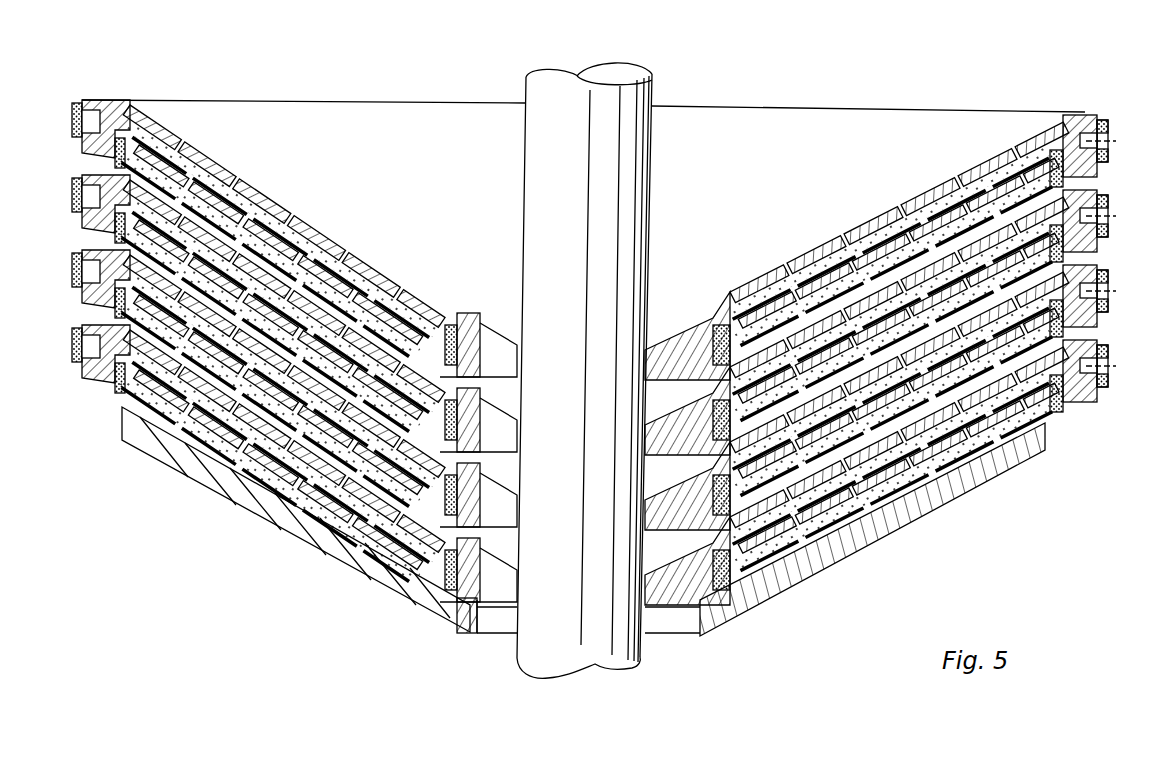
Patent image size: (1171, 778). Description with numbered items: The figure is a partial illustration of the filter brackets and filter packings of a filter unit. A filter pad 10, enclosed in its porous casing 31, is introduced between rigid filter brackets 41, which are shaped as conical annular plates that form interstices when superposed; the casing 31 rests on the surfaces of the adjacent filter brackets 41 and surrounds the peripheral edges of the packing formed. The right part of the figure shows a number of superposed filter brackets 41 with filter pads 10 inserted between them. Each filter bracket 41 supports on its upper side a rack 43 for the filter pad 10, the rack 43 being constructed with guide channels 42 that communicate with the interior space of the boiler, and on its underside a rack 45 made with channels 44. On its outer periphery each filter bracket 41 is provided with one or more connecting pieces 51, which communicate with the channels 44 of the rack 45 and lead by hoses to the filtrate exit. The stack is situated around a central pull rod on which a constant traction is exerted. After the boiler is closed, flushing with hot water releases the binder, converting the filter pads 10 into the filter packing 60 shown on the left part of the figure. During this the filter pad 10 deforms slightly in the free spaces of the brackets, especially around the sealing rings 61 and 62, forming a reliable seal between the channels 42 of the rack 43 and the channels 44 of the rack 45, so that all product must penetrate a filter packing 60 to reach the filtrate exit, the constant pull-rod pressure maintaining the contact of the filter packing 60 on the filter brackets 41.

The filter pad 10 is at (1002, 203).
The casing 31 is at (868, 250).
The filter bracket 41 is at (122, 402).
The guide channels 42 is at (232, 163).
The rack 43 is at (913, 190).
The channels 44 is at (320, 300).
The rack 45 is at (380, 345).
The connecting piece 51 is at (1112, 152).
The filter packing 60 is at (333, 273).
The sealing ring 61 is at (120, 137).
The sealing ring 62 is at (452, 320).